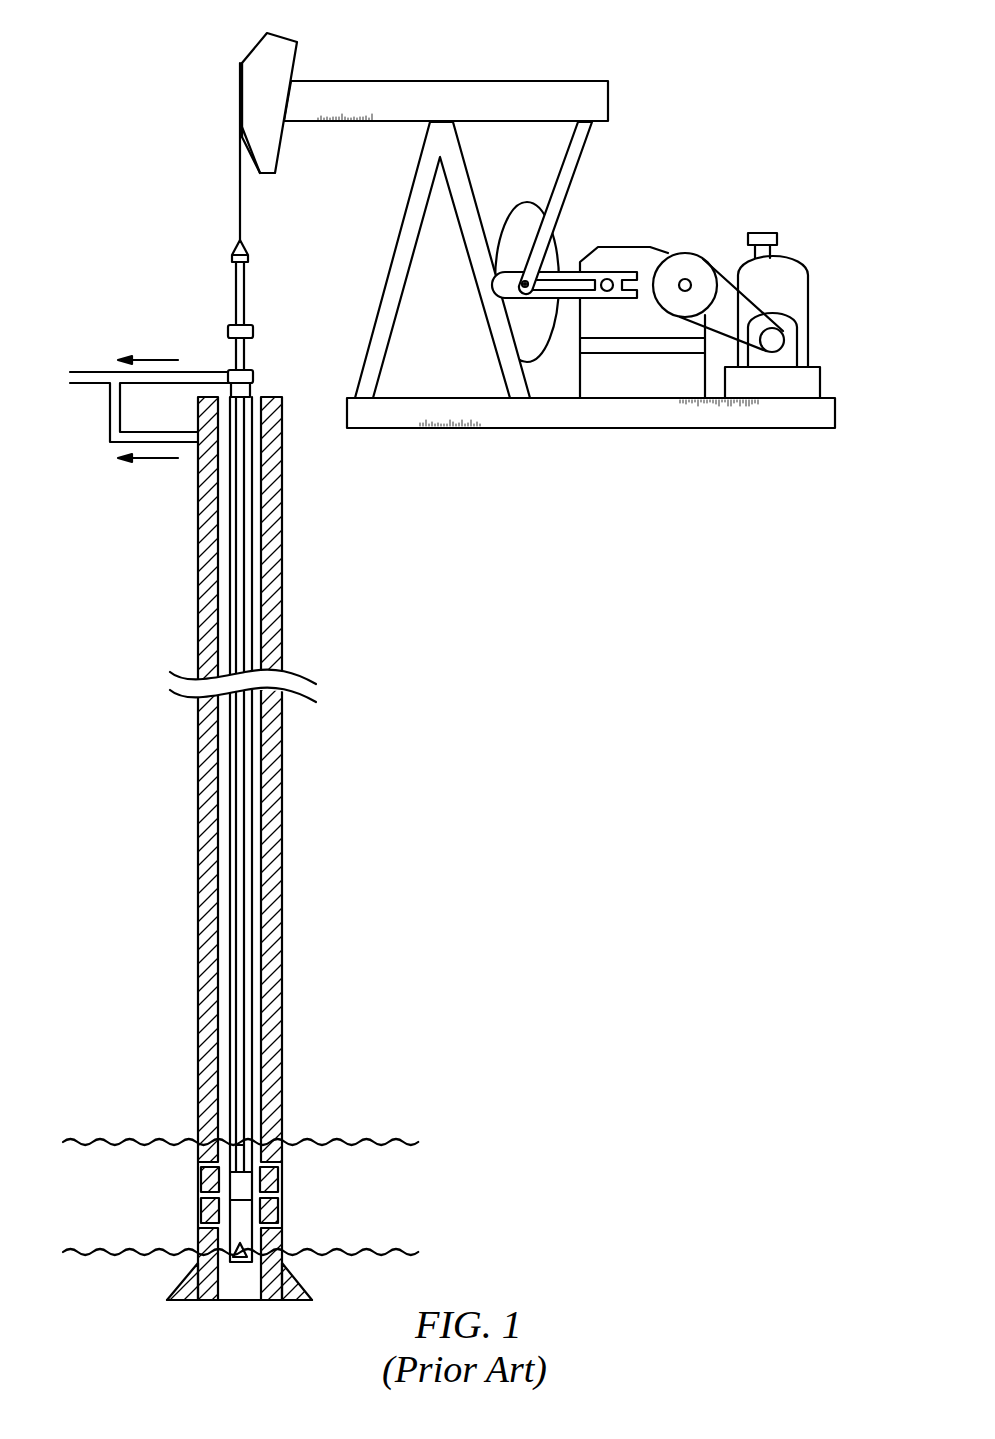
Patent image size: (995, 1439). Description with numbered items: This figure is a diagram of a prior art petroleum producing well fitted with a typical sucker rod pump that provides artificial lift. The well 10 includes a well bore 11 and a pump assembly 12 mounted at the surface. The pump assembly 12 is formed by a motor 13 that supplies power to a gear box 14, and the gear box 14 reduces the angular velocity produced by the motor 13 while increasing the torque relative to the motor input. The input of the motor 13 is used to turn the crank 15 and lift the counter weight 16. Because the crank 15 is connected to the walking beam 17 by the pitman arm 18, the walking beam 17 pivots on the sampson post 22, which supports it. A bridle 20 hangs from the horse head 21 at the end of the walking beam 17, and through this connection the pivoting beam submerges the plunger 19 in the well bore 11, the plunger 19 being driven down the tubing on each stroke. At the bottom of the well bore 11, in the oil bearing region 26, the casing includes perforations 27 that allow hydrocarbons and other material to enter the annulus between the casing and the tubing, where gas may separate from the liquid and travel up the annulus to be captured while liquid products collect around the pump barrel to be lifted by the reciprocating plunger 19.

The well 10 is at (92, 302).
The well bore 11 is at (153, 772).
The pump assembly 12 is at (766, 127).
The motor 13 is at (808, 292).
The gear box 14 is at (653, 385).
The crank 15 is at (568, 272).
The counter weight 16 is at (560, 227).
The walking beam 17 is at (445, 80).
The pitman arm 18 is at (583, 158).
The plunger 19 is at (215, 1115).
The bridle 20 is at (240, 180).
The horse head 21 is at (255, 45).
The sampson post 22 is at (395, 247).
The oil bearing region 26 is at (143, 1198).
The perforations 27 is at (282, 1183).